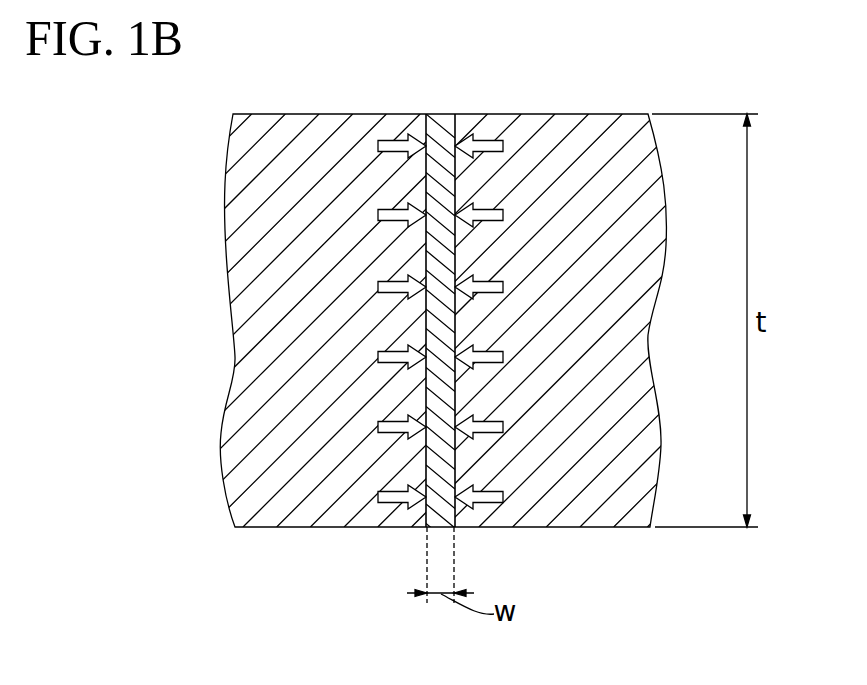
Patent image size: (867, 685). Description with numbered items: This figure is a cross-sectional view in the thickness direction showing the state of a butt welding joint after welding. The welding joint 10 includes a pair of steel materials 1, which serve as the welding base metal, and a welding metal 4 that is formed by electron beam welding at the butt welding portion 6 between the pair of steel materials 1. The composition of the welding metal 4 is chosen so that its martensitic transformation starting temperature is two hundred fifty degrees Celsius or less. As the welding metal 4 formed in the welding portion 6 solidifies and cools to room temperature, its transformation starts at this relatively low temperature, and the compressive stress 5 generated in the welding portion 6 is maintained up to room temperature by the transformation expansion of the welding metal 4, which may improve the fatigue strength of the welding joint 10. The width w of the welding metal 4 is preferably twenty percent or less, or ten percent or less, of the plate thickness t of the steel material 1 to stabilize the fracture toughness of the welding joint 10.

The steel material 1 is at (372, 513).
The welding metal 4 is at (440, 515).
The compressive stress 5 is at (378, 146).
The butt welding portion 6 is at (444, 90).
The welding joint 10 is at (433, 315).